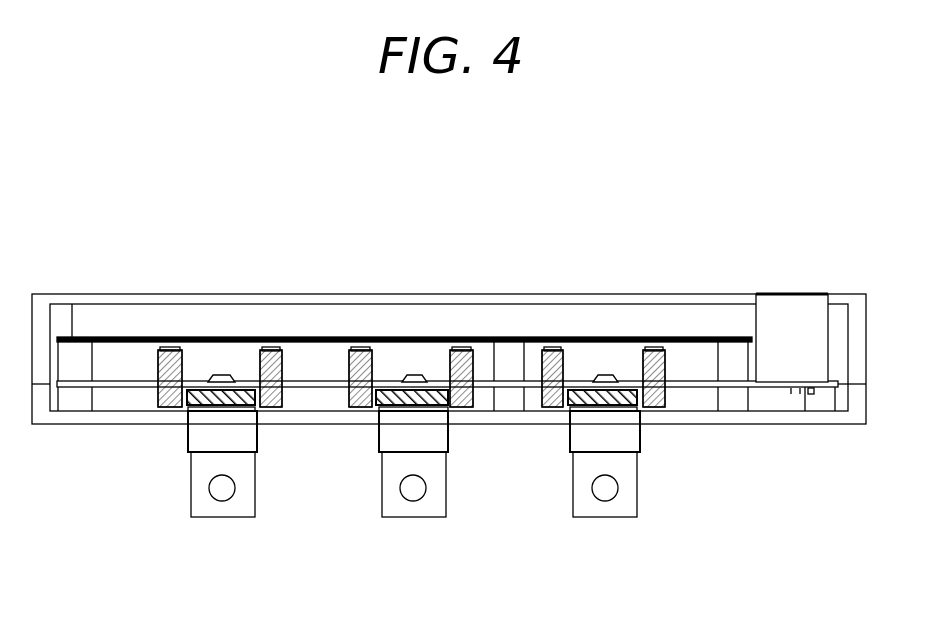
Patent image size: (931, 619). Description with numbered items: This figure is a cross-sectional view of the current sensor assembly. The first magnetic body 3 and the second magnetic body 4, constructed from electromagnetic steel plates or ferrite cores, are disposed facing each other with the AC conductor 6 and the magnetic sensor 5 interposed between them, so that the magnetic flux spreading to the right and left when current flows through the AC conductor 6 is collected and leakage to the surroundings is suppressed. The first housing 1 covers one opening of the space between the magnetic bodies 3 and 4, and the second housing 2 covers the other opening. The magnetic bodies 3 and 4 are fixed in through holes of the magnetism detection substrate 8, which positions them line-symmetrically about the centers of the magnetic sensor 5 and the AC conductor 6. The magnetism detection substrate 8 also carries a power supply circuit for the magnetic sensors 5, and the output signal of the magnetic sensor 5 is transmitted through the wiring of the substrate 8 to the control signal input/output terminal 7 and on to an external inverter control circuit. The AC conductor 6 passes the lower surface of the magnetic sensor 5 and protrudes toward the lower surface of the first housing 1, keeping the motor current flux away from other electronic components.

The first housing 1 is at (79, 340).
The second housing 2 is at (80, 414).
The first magnetic body 3 is at (367, 347).
The second magnetic body 4 is at (468, 347).
The magnetic sensor 5 is at (415, 376).
The AC conductor 6 is at (448, 405).
The control signal input/output terminal 7 is at (778, 305).
The magnetism detection substrate 8 is at (675, 384).